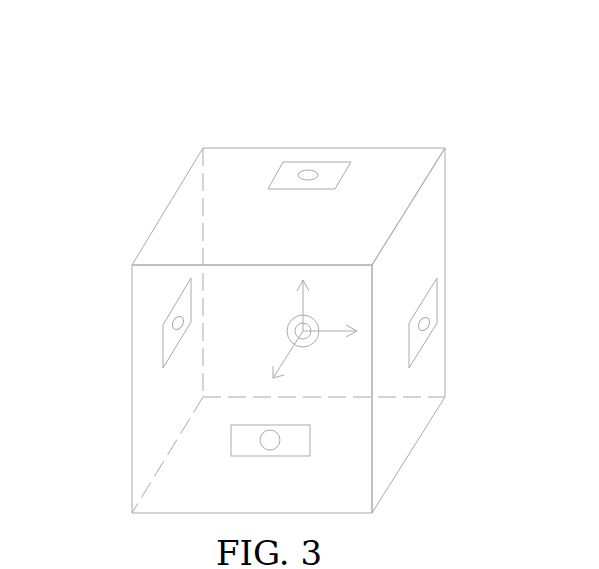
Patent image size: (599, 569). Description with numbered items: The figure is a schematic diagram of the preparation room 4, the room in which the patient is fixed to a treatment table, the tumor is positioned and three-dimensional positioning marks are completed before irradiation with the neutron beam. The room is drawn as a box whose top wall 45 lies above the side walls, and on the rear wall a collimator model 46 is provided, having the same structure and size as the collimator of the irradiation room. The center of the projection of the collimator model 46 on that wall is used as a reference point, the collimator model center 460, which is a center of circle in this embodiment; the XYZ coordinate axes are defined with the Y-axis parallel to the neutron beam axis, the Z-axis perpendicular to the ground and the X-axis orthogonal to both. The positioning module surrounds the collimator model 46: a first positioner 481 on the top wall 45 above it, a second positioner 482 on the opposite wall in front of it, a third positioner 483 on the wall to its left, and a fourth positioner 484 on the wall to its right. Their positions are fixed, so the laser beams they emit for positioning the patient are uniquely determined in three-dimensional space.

The preparation room 4 is at (273, 261).
The top wall 45 is at (375, 173).
The collimator model 46 is at (397, 321).
The collimator model center 460 is at (307, 335).
The first positioner 481 is at (313, 162).
The second positioner 482 is at (231, 437).
The third positioner 483 is at (162, 347).
The fourth positioner 484 is at (437, 312).